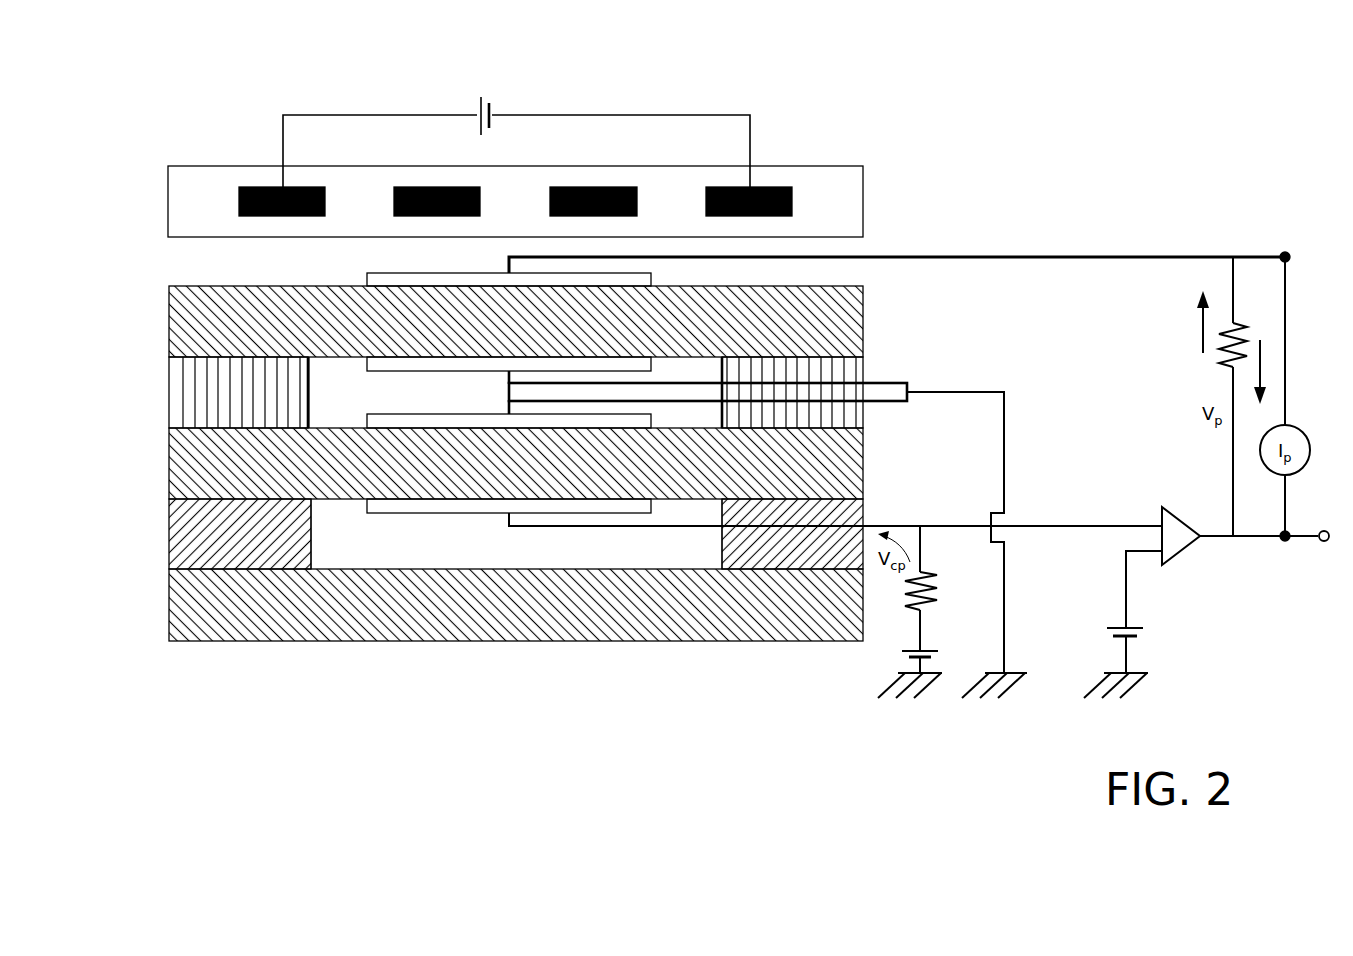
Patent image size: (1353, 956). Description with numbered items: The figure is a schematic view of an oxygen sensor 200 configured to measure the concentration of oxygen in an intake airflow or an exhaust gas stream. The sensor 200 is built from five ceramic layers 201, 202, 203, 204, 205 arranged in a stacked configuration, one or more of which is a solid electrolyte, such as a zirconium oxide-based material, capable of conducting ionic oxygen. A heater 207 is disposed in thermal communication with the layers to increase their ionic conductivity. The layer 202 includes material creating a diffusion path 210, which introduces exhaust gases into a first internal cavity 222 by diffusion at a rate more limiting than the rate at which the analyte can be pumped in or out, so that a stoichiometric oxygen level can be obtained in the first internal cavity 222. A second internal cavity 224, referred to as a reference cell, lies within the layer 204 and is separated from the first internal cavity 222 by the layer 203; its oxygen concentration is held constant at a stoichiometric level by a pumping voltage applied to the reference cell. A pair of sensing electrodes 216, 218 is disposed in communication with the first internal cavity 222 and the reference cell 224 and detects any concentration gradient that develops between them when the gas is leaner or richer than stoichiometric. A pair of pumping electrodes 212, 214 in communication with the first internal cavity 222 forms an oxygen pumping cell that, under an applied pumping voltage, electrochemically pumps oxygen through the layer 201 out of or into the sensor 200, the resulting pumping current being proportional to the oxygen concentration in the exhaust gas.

The oxygen sensor 200 is at (857, 99).
The ceramic layer 201 is at (169, 300).
The ceramic layer 202 is at (169, 370).
The ceramic layer 203 is at (169, 487).
The ceramic layer 204 is at (169, 558).
The ceramic layer 205 is at (169, 628).
The heater 207 is at (238, 191).
The diffusion path 210 is at (202, 408).
The pumping electrode 212 is at (368, 274).
The pumping electrode 214 is at (368, 371).
The sensing electrode 216 is at (368, 415).
The sensing electrode 218 is at (368, 512).
The first internal cavity 222 is at (470, 402).
The second internal cavity 224 is at (470, 552).